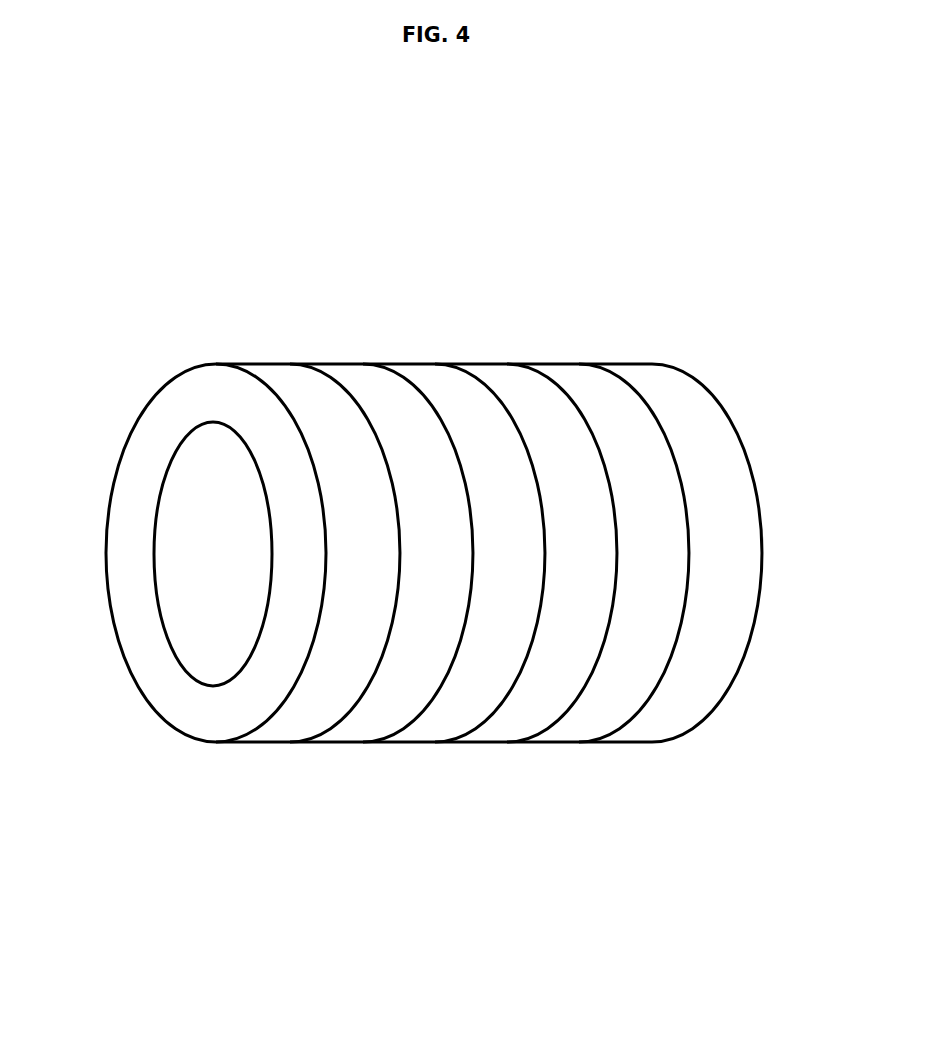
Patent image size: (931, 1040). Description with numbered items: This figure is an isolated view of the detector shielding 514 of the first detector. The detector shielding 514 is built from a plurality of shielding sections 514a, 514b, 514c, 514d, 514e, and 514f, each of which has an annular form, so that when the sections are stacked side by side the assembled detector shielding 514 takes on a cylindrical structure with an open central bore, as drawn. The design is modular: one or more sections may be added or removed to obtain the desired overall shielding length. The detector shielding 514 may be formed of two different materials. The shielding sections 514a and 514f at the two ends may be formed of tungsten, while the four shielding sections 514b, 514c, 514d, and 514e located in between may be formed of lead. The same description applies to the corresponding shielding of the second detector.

The detector shielding 514 is at (461, 191).
The shielding section 514a is at (291, 742).
The shielding section 514b is at (363, 742).
The shielding section 514c is at (433, 742).
The shielding section 514d is at (505, 742).
The shielding section 514e is at (578, 742).
The shielding section 514f is at (649, 742).